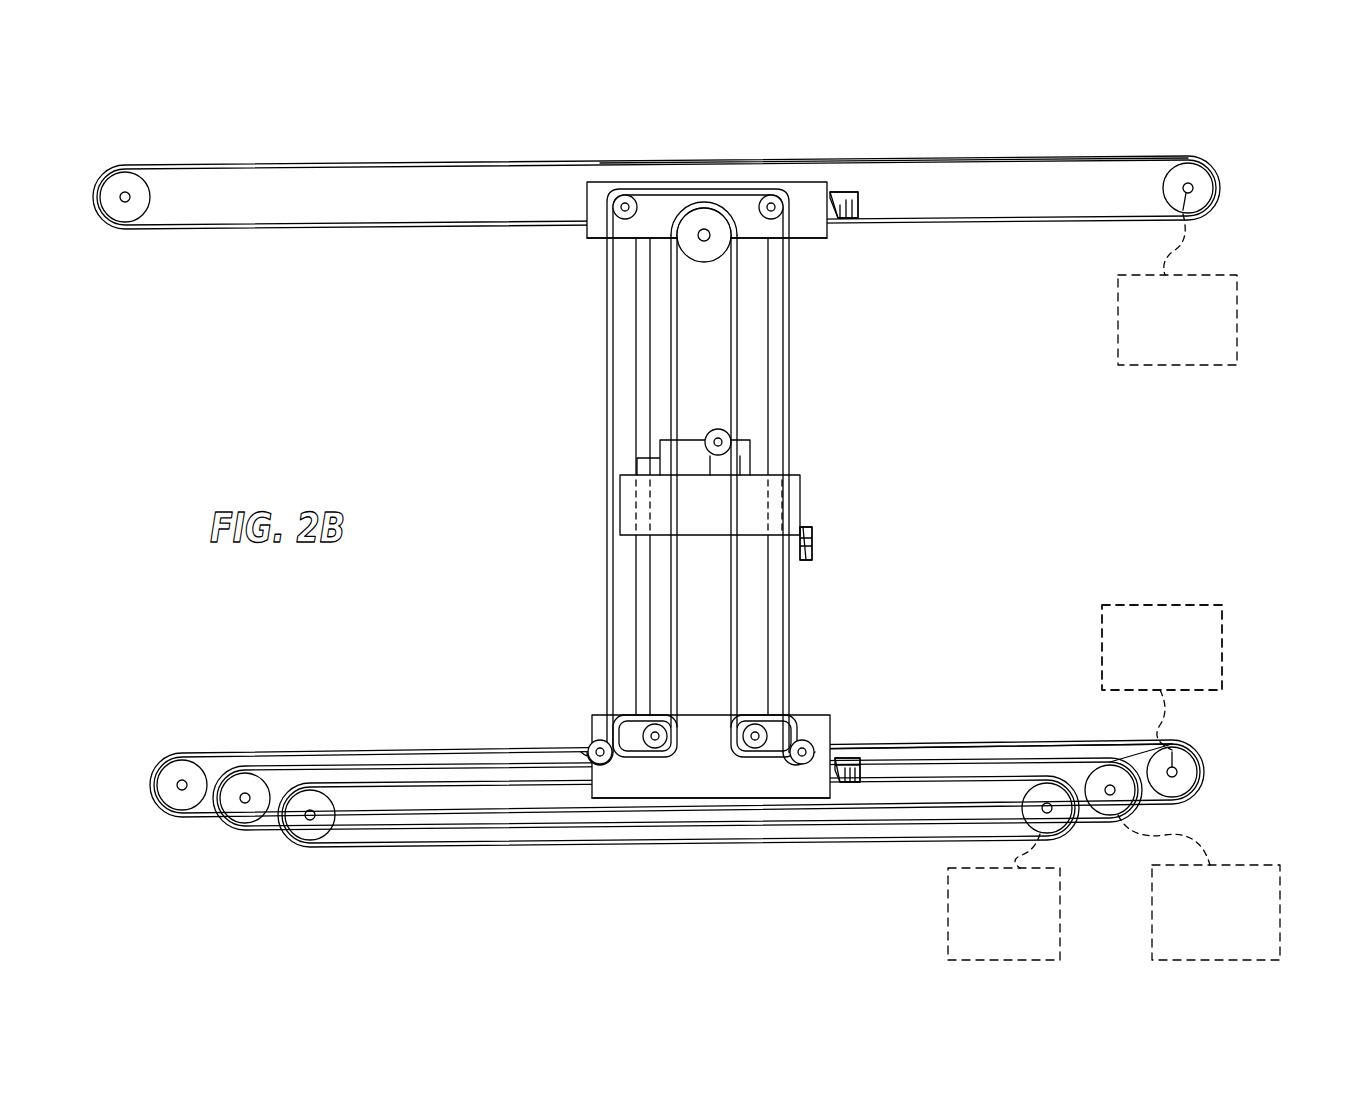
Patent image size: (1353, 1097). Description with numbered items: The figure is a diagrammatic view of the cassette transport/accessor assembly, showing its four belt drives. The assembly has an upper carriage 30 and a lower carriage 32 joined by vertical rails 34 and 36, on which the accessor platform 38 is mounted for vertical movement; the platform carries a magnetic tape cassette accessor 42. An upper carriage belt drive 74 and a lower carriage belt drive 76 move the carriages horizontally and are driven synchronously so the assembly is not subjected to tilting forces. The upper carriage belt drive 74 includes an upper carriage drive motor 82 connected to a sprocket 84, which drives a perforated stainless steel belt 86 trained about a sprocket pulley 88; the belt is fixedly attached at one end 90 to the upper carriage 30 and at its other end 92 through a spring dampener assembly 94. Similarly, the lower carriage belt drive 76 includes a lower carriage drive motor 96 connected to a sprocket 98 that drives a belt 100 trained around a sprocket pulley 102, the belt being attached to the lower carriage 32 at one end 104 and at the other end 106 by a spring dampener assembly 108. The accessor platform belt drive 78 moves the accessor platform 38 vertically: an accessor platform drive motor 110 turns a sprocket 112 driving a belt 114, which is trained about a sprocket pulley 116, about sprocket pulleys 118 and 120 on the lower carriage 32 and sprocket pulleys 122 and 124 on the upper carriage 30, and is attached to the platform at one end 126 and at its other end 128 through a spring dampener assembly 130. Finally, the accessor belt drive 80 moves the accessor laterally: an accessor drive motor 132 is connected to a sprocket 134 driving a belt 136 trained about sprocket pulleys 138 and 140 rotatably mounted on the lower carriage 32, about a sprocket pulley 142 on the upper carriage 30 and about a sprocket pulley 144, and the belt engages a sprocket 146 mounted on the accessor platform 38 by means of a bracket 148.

The upper carriage 30 is at (807, 243).
The lower carriage 32 is at (634, 800).
The vertical rail 34 is at (786, 356).
The vertical rail 36 is at (633, 374).
The accessor platform 38 is at (617, 500).
The magnetic tape cassette accessor 42 is at (688, 438).
The upper carriage belt drive 74 is at (1054, 155).
The lower carriage belt drive 76 is at (806, 850).
The accessor platform belt drive 78 is at (1212, 823).
The accessor belt drive 80 is at (1231, 640).
The upper carriage drive motor 82 is at (1116, 318).
The sprocket 84 is at (1208, 172).
The perforated stainless steel belt 86 is at (872, 162).
The sprocket pulley 88 is at (108, 178).
The belt end 90 is at (584, 210).
The belt end 92 is at (863, 200).
The spring dampener assembly 94 is at (858, 224).
The lower carriage drive motor 96 is at (946, 925).
The sprocket 98 is at (1048, 834).
The perforated stainless steel belt 100 is at (432, 846).
The sprocket pulley 102 is at (306, 841).
The belt end 104 is at (585, 796).
The belt end 106 is at (845, 790).
The spring dampener assembly 108 is at (859, 759).
The accessor platform drive motor 110 is at (1150, 930).
The sprocket 112 is at (1098, 768).
The perforated stainless steel belt 114 is at (792, 386).
The sprocket pulley 116 is at (240, 824).
The sprocket pulley 118 is at (590, 743).
The sprocket pulley 120 is at (812, 742).
The sprocket pulley 122 is at (626, 194).
The sprocket pulley 124 is at (771, 194).
The belt end 126 is at (798, 458).
The belt end 128 is at (807, 563).
The spring dampener assembly 130 is at (815, 542).
The accessor drive motor 132 is at (1160, 603).
The sprocket 134 is at (1197, 755).
The perforated stainless steel belt 136 is at (1178, 755).
The sprocket pulley 138 is at (648, 727).
The sprocket pulley 140 is at (763, 727).
The sprocket pulley 142 is at (704, 207).
The sprocket pulley 144 is at (174, 762).
The sprocket 146 is at (717, 429).
The bracket 148 is at (635, 458).